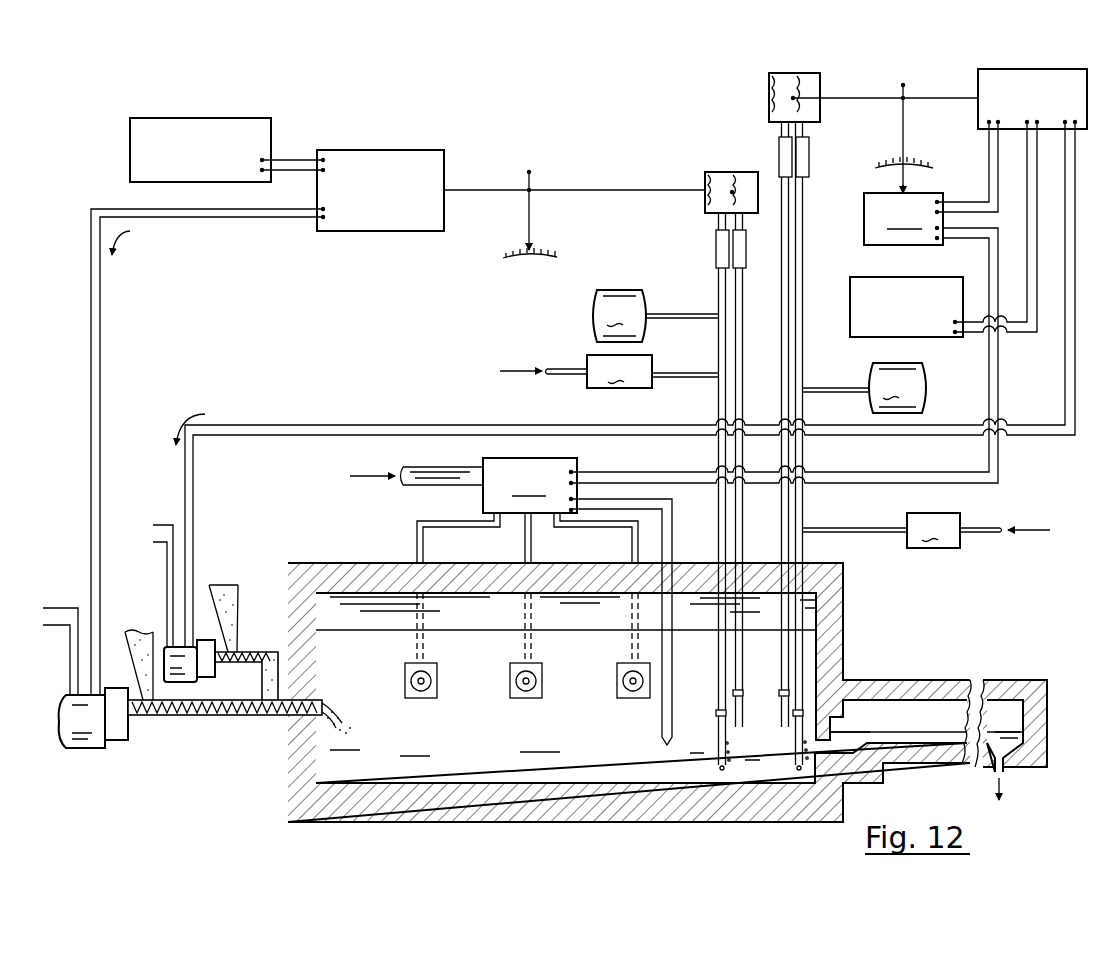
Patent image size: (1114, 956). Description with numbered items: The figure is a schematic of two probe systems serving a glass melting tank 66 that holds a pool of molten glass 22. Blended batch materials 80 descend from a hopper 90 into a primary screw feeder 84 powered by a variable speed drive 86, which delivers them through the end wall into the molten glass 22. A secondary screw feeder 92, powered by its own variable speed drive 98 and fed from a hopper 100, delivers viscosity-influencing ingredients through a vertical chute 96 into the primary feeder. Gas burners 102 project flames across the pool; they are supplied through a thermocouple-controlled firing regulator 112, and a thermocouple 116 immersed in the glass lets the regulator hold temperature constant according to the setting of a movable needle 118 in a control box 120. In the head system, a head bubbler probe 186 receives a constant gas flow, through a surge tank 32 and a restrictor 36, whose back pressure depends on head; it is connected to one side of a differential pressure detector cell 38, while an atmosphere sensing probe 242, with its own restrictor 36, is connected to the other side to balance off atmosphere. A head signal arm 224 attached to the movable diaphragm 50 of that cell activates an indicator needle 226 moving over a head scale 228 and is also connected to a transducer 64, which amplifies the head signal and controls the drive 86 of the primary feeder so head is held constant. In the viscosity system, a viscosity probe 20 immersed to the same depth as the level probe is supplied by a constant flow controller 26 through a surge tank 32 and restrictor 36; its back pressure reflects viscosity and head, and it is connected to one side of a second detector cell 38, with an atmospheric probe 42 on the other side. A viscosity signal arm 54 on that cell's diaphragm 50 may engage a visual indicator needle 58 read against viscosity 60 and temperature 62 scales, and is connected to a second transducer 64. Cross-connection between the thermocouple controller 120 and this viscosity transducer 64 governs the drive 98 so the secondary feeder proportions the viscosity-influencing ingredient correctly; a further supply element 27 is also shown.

The viscosity probe 20 is at (795, 762).
The molten glass 22 is at (492, 763).
The constant flow controller 26 is at (926, 530).
The supply unit 27 is at (609, 371).
The surge tank 32 is at (759, 351).
The restrictor 36 is at (740, 248).
The differential pressure detector cell 38 is at (722, 165).
The atmospheric probe 42 is at (793, 712).
The movable diaphragm 50 is at (732, 192).
The viscosity signal arm 54 is at (965, 100).
The visual indicator needle 58 is at (905, 128).
The viscosity scale 60 is at (935, 160).
The temperature scale 62 is at (940, 176).
The transducer 64 is at (380, 150).
The glass melting tank 66 is at (336, 556).
The blended batch materials 80 is at (340, 720).
The primary screw feeder 84 is at (143, 717).
The variable speed drive 86 is at (107, 748).
The hopper 90 is at (128, 645).
The secondary screw feeder 92 is at (238, 652).
The vertical chute 96 is at (262, 674).
The variable speed drive 98 is at (206, 678).
The hopper 100 is at (248, 573).
The gas burners 102 is at (525, 680).
The thermocouple-controlled firing regulator 112 is at (674, 445).
The thermocouple 116 is at (663, 745).
The movable needle 118 is at (880, 194).
The control box 120 is at (931, 183).
The head bubbler probe 186 is at (718, 766).
The head signal arm 224 is at (615, 190).
The indicator needle 226 is at (529, 209).
The head scale 228 is at (500, 257).
The atmosphere sensing probe 242 is at (770, 678).